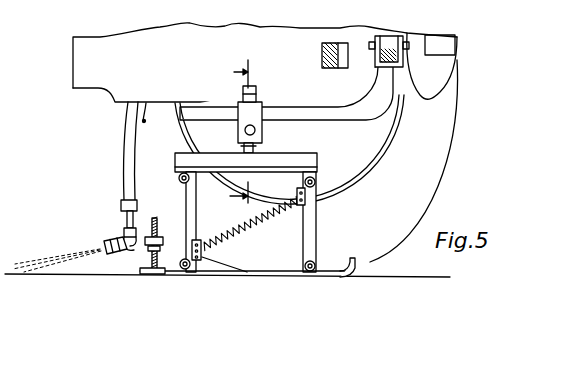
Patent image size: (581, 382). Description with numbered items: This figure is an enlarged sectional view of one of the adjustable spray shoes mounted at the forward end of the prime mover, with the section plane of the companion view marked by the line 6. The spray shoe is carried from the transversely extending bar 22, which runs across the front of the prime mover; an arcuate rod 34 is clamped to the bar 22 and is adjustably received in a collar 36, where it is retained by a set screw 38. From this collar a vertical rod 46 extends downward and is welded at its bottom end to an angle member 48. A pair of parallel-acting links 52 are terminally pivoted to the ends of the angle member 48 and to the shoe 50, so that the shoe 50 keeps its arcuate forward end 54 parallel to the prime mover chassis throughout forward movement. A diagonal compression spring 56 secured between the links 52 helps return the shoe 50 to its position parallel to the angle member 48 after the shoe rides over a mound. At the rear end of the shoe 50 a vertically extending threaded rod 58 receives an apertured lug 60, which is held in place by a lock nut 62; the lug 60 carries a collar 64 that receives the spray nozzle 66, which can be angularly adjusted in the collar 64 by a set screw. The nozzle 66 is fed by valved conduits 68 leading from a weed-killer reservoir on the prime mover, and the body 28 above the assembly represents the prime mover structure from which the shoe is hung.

The vehicle body 28 is at (259, 51).
The transversely extending bar 22 is at (388, 36).
The arcuate rod 34 is at (370, 108).
The collar 36 is at (256, 115).
The set screw 38 is at (242, 95).
The vertical rod 46 is at (254, 91).
The angle member 48 is at (318, 160).
The parallel-acting links 52 is at (185, 200).
The shoe 50 is at (247, 276).
The arcuate forward end 54 is at (358, 261).
The diagonal compression spring 56 is at (266, 223).
The vertically extending threaded rod 58 is at (151, 225).
The apertured lug 60 is at (164, 242).
The lock nut 62 is at (161, 236).
The collar 64 is at (128, 249).
The spray nozzle 66 is at (106, 243).
The valved conduits 68 is at (131, 137).
The section line indicator 6 is at (227, 133).